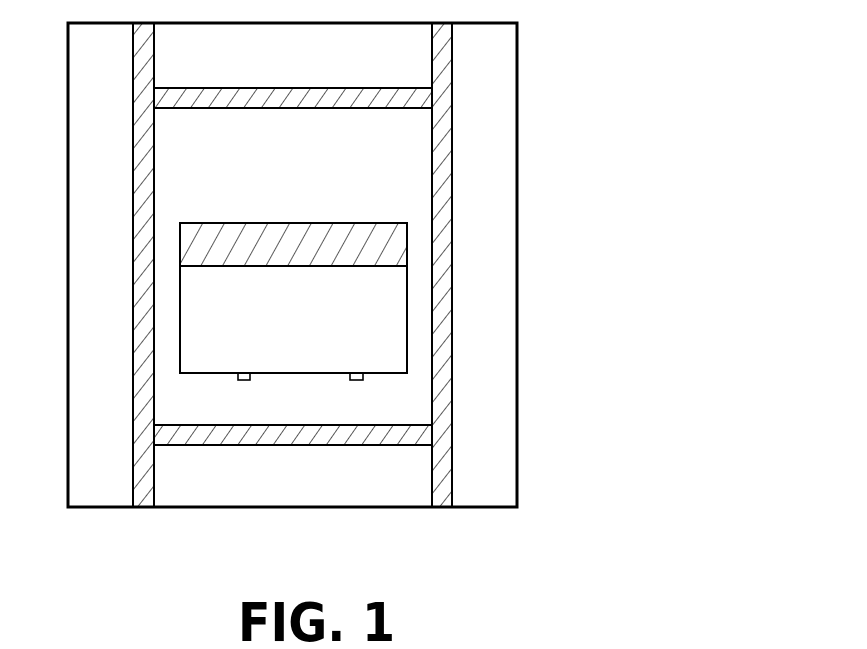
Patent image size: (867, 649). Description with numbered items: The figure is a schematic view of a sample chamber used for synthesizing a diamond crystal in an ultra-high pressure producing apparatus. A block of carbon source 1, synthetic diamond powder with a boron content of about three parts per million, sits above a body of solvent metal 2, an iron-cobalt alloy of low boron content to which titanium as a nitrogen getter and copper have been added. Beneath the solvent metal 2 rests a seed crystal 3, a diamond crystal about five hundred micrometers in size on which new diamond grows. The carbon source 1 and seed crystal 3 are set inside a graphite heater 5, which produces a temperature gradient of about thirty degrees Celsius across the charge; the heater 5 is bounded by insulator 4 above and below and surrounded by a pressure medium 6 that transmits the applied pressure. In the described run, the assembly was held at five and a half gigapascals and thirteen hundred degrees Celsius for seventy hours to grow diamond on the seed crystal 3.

The carbon source 1 is at (365, 250).
The solvent metal 2 is at (370, 330).
The seed crystal 3 is at (357, 380).
The insulator 4 is at (410, 150).
The graphite heater 5 is at (143, 282).
The pressure medium 6 is at (94, 478).